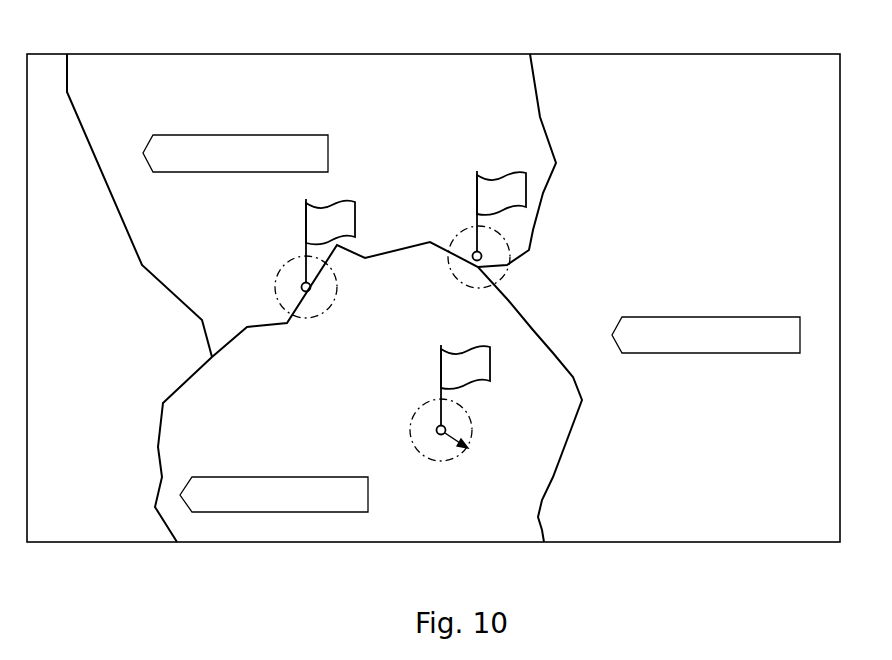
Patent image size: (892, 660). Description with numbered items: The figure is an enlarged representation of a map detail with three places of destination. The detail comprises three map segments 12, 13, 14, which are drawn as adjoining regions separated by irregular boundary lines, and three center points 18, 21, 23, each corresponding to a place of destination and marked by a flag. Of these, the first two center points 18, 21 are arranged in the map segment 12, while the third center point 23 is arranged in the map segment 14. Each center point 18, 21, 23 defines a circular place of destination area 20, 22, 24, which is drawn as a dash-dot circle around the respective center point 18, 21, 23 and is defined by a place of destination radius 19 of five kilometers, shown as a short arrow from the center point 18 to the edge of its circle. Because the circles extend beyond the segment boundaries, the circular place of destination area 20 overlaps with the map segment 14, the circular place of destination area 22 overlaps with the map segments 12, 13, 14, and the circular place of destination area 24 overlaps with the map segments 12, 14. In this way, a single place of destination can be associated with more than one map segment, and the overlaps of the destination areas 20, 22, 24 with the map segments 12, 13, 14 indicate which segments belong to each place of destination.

The map segment 12 is at (228, 93).
The map segment 13 is at (691, 278).
The map segment 14 is at (262, 432).
The center point 18 is at (422, 412).
The place of destination radius 19 is at (453, 452).
The circular place of destination area 20 is at (470, 428).
The center point 21 is at (462, 244).
The circular place of destination area 22 is at (512, 248).
The center point 23 is at (292, 268).
The circular place of destination area 24 is at (338, 283).